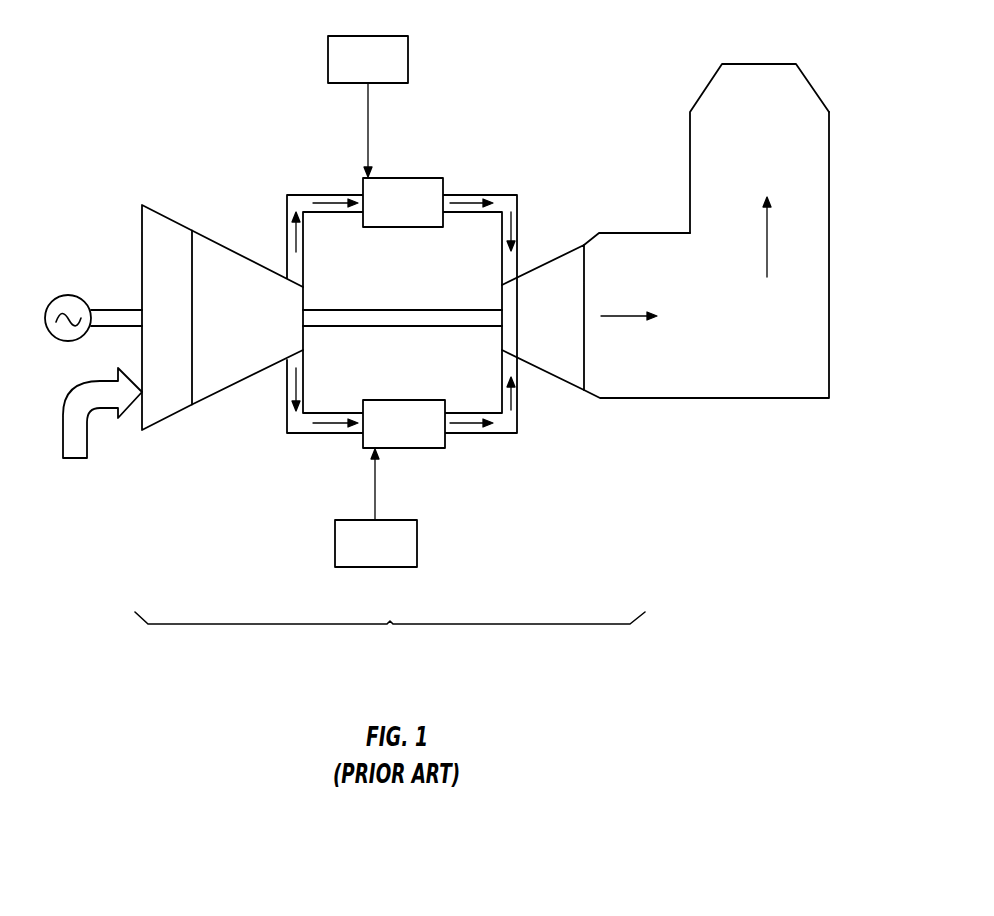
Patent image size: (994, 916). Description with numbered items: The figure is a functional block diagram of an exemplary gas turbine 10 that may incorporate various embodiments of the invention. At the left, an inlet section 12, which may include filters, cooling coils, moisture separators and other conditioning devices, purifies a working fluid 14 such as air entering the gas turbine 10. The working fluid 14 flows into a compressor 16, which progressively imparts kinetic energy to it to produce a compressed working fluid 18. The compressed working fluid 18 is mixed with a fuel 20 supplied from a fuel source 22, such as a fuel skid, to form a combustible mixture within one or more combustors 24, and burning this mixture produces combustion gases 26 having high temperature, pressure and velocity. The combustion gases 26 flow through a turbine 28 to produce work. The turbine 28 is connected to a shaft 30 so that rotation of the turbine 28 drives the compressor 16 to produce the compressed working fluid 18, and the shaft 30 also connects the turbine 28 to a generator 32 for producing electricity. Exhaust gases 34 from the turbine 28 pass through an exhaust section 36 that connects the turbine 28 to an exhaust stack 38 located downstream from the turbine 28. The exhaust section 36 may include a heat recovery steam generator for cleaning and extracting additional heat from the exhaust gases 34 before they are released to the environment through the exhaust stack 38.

The gas turbine 10 is at (390, 635).
The inlet section 12 is at (182, 327).
The working fluid 14 is at (68, 458).
The compressor 16 is at (254, 326).
The compressed working fluid 18 is at (296, 240).
The fuel 20 is at (368, 147).
The fuel source 22 is at (378, 72).
The combustor 24 is at (412, 216).
The combustion gases 26 is at (517, 225).
The turbine 28 is at (548, 321).
The shaft 30 is at (398, 326).
The generator 32 is at (68, 295).
The exhaust gases 34 is at (622, 316).
The exhaust section 36 is at (732, 337).
The exhaust stack 38 is at (808, 85).